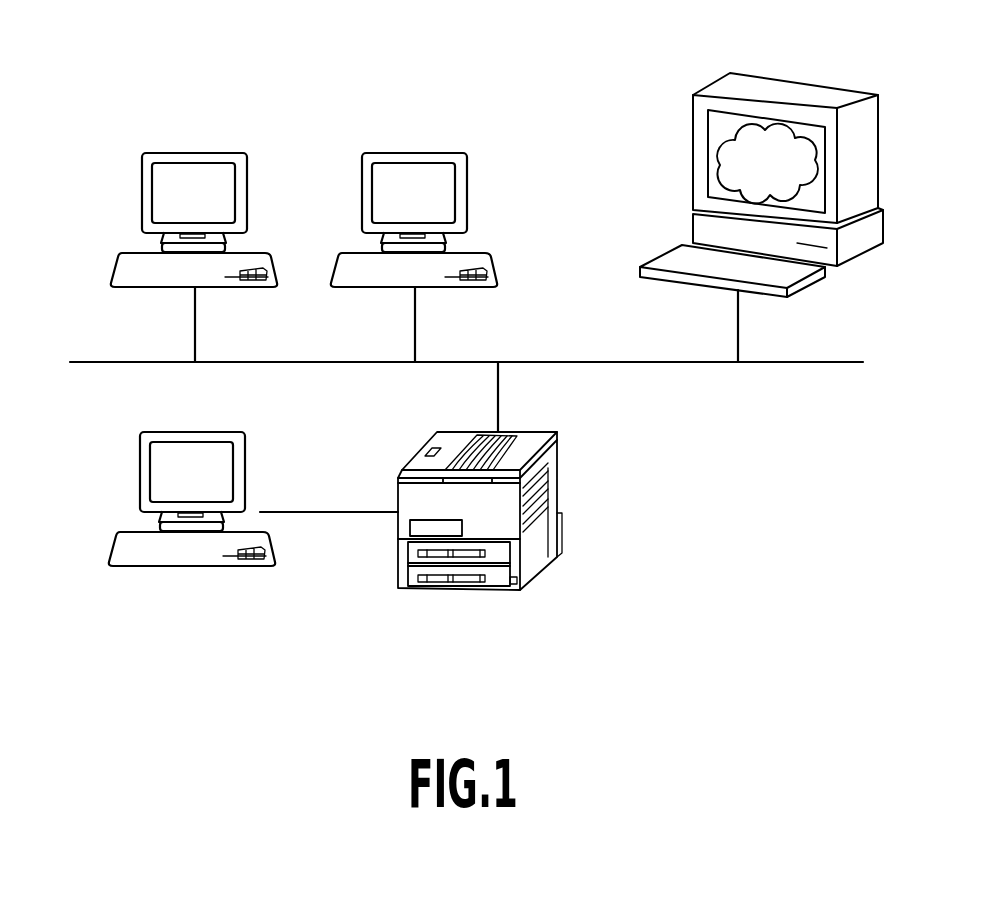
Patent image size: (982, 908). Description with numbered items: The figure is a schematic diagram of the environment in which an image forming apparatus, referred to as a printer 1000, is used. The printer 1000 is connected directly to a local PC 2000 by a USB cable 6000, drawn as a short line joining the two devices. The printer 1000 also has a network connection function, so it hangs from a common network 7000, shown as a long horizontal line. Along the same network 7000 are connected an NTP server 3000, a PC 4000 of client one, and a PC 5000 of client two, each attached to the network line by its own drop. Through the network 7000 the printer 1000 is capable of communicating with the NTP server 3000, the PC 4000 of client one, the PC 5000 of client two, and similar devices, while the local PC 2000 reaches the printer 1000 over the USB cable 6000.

The printer 1000 is at (557, 432).
The local PC 2000 is at (155, 433).
The NTP server 3000 is at (780, 77).
The PC of client 1 4000 is at (229, 153).
The PC of client 2 5000 is at (449, 153).
The USB cable 6000 is at (330, 510).
The network 7000 is at (90, 359).